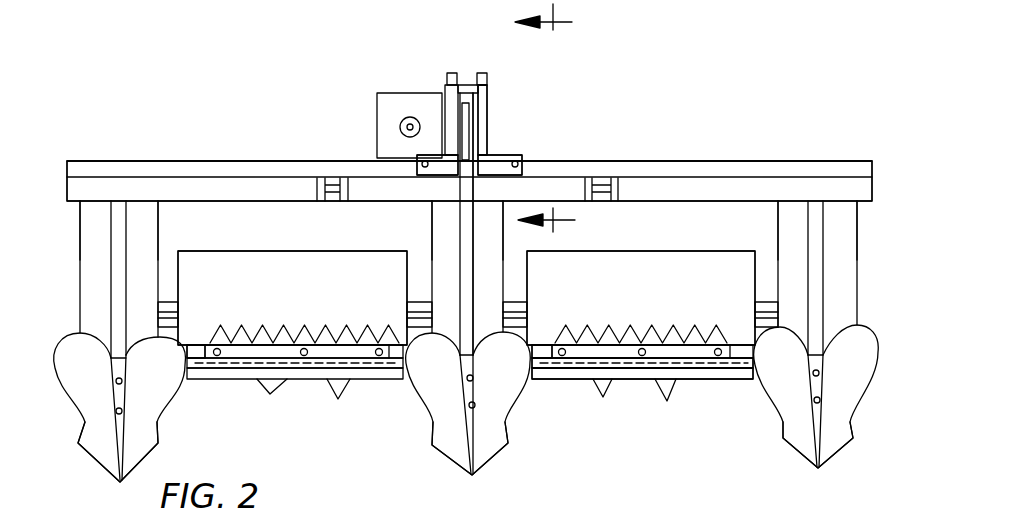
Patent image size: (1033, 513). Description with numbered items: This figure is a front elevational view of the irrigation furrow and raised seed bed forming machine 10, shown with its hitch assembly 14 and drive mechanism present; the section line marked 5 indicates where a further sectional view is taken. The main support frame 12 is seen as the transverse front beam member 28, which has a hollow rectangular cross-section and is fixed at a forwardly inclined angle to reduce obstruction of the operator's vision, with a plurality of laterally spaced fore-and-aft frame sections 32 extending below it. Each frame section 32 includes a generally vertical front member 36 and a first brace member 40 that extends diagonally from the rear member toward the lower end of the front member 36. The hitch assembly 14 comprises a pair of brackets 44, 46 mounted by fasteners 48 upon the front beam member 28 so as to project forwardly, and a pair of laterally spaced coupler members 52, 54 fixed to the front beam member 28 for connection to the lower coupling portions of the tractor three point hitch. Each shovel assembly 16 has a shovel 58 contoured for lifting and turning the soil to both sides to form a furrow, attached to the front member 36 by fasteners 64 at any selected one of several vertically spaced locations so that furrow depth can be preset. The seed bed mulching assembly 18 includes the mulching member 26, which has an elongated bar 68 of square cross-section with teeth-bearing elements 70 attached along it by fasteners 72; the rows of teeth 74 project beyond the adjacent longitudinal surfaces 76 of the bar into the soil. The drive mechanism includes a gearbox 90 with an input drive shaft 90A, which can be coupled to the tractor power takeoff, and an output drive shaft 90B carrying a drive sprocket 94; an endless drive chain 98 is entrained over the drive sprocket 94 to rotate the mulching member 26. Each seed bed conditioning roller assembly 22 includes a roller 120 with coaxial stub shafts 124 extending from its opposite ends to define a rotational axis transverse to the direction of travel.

The furrow and bed forming machine 10 is at (680, 62).
The main support frame 12 is at (748, 158).
The hitch assembly 14 is at (535, 110).
The shovel assembly 16 is at (97, 462).
The seed bed mulching assembly 18 is at (358, 318).
The seed bed conditioning roller assembly 22 is at (258, 247).
The mulching member 26 is at (539, 372).
The front beam member 28 is at (784, 160).
The frame section 32 is at (78, 297).
The front member 36 is at (128, 255).
The first brace member 40 is at (158, 230).
The bracket 44 is at (448, 73).
The bracket 46 is at (483, 73).
The fasteners 48 is at (420, 163).
The coupler member 52 is at (603, 178).
The coupler member 54 is at (337, 203).
The shovel 58 is at (158, 426).
The fasteners 64 is at (123, 410).
The elongated bar 68 is at (745, 358).
The teeth-bearing elements 70 is at (350, 362).
The fasteners 72 is at (304, 349).
The teeth 74 is at (323, 328).
The longitudinal surfaces 76 is at (196, 359).
The gearbox 90 is at (385, 94).
The input drive shaft 90A is at (402, 124).
The output drive shaft 90B is at (525, 113).
The drive sprocket 94 is at (478, 108).
The endless drive chain 98 is at (467, 163).
The roller 120 is at (180, 251).
The stub shafts 124 is at (170, 302).
The section line 5 is at (545, 124).